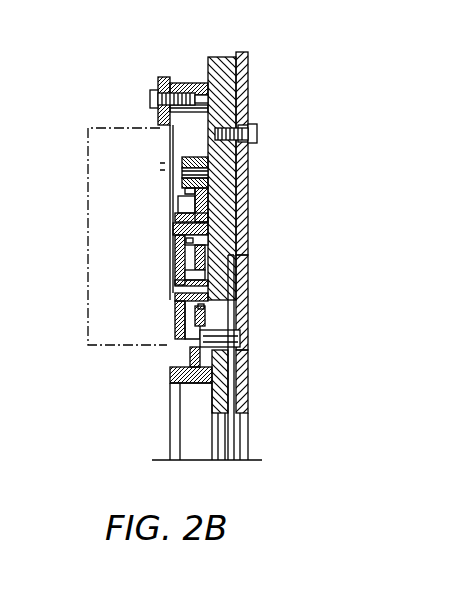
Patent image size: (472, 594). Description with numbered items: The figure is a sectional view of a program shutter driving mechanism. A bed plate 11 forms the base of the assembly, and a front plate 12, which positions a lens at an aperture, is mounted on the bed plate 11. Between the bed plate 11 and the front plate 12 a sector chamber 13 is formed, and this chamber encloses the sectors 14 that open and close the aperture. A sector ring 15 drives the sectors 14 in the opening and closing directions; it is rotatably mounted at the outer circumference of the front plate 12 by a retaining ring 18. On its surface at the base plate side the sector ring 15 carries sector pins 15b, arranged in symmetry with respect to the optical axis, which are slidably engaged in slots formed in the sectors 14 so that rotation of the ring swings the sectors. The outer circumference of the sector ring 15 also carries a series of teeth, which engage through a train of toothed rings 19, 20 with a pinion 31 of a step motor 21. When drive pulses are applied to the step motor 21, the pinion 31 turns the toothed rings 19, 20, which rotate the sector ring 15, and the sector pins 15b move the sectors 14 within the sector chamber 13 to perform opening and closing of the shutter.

The bed plate 11 is at (248, 73).
The step motor 21 is at (115, 125).
The pinion 31 is at (188, 157).
The toothed ring 20 is at (192, 205).
The toothed ring 19 is at (185, 265).
The sector ring 15 is at (200, 334).
The sector pin 15b is at (240, 336).
The retaining ring 18 is at (192, 358).
The front plate 12 is at (170, 382).
The sector chamber 13 is at (238, 392).
The sector 14 is at (231, 440).